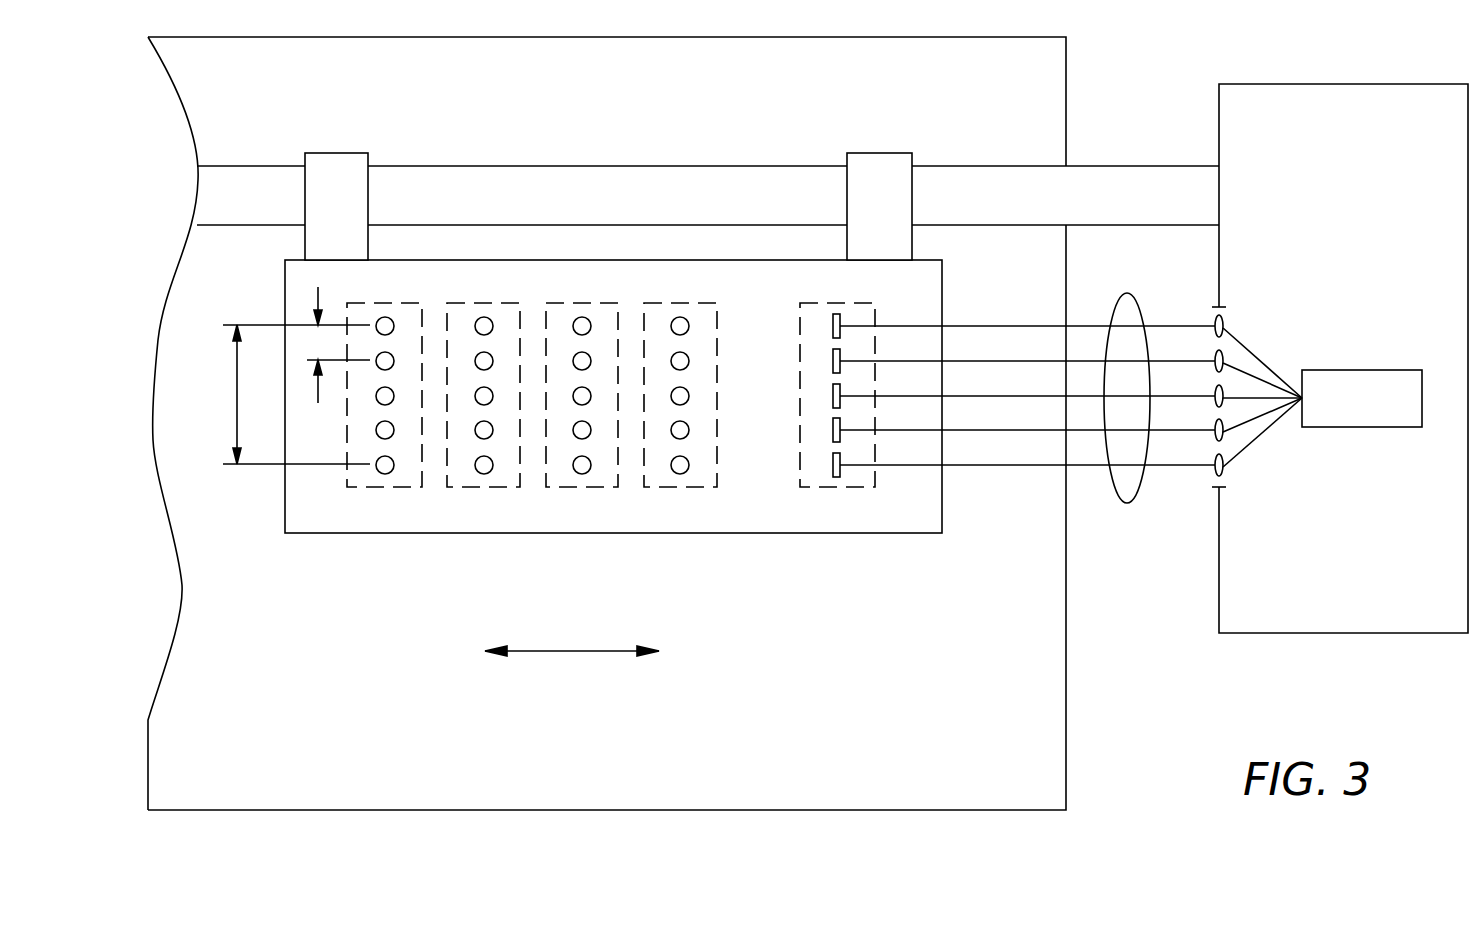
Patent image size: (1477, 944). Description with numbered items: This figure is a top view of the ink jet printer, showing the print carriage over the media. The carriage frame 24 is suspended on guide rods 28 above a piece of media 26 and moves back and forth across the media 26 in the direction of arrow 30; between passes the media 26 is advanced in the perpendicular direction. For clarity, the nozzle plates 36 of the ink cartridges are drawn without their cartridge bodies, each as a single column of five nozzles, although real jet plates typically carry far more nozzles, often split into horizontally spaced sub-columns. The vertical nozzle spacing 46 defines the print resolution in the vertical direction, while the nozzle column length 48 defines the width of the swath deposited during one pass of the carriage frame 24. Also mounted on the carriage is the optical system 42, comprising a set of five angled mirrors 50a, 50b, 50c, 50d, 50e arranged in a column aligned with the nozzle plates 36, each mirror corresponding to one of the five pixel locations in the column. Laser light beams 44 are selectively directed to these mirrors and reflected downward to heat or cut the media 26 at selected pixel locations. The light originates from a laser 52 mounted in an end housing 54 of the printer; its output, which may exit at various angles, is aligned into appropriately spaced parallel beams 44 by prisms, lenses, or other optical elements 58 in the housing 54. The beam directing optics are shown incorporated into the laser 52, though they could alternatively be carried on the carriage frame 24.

The carriage frame 24 is at (779, 510).
The media 26 is at (836, 711).
The guide rods 28 is at (273, 190).
The arrow 30 is at (555, 651).
The nozzle plates 36 is at (388, 488).
The optical system 42 is at (976, 435).
The laser light beams 44 is at (1123, 504).
The vertical nozzle spacing 46 is at (317, 345).
The nozzle column length 48 is at (237, 390).
The angled mirror 50a is at (833, 322).
The angled mirror 50b is at (833, 357).
The angled mirror 50c is at (833, 392).
The angled mirror 50d is at (833, 426).
The angled mirror 50e is at (833, 461).
The laser 52 is at (1352, 428).
The end housing 54 is at (1372, 84).
The optical elements 58 is at (1223, 440).